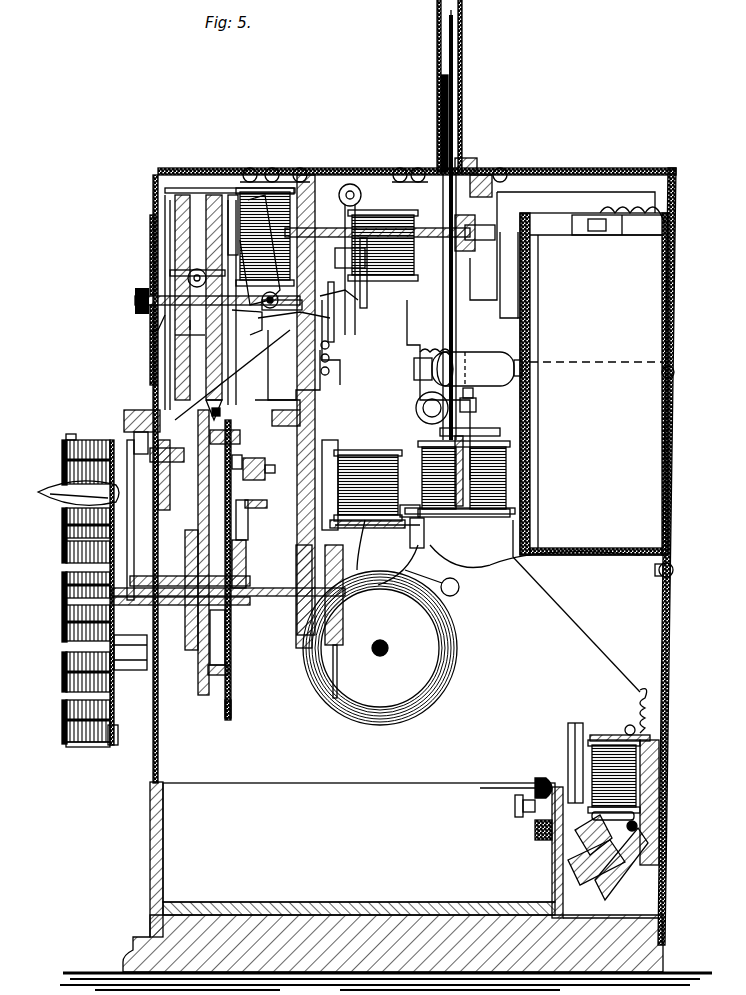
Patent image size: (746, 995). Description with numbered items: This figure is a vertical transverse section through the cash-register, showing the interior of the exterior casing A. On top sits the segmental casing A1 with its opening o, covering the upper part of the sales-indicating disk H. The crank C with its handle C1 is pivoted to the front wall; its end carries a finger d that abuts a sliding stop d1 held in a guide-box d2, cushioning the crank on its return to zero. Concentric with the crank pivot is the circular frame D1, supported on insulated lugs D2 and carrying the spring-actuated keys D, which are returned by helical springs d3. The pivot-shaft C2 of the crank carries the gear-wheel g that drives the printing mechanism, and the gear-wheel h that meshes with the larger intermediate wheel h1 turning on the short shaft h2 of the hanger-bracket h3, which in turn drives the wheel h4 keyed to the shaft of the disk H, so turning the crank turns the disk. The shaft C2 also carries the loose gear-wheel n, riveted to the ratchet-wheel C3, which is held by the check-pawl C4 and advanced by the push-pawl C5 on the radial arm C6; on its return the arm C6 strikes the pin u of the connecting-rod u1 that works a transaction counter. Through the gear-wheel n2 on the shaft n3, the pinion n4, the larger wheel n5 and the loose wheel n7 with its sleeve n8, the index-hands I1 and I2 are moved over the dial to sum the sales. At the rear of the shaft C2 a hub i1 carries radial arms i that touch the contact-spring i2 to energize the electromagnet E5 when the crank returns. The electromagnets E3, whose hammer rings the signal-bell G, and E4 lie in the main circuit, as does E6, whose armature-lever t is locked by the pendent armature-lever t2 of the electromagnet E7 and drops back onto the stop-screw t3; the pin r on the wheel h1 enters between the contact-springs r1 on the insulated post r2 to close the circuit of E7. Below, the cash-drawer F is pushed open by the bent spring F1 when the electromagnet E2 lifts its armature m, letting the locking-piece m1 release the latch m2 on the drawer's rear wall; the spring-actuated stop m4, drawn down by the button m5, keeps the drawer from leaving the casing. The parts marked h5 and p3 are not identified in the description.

The exterior casing A is at (678, 628).
The segmental casing A1 is at (462, 100).
The sales-indicating disk H is at (462, 38).
The opening o is at (435, 225).
The electromagnet E6 is at (290, 200).
The electromagnet E7 is at (395, 212).
The gear-wheel h4 is at (341, 259).
The armature-lever t2 is at (353, 234).
The rod h5 is at (375, 261).
The armature-lever t is at (262, 251).
The stop-screw t3 is at (294, 319).
The insulated post r2 is at (247, 324).
The pin r is at (339, 302).
The contact-springs r1 is at (343, 342).
The intermediate gear-wheel h1 is at (340, 328).
The hanger-bracket h3 is at (294, 365).
The gear-wheel n7 is at (182, 195).
The gear-wheel n2 is at (214, 195).
The index-hand I2 is at (150, 248).
The index-hand I1 is at (150, 358).
The shaft n3 is at (135, 300).
The sleeve n8 is at (150, 332).
The gear-wheel n5 is at (197, 299).
The pin p3 is at (190, 338).
The guide-box d2 is at (124, 412).
The sliding stop d1 is at (134, 440).
The finger d is at (162, 475).
The crank C is at (134, 525).
The gear-wheel n is at (198, 515).
The pinion n4 is at (220, 412).
The gear-wheel g is at (185, 552).
The check-pawl C4 is at (231, 440).
The pin u is at (248, 459).
The connecting-rod u1 is at (264, 469).
The short shaft h2 is at (277, 431).
The push-pawl C5 is at (248, 510).
The radial arm C6 is at (246, 555).
The gear-wheel h is at (296, 568).
The pivot-shaft C2 is at (268, 598).
The ratchet-wheel C3 is at (248, 712).
The handle C1 is at (61, 493).
The keys D is at (62, 450).
The helical springs d3 is at (70, 434).
The lugs D2 is at (118, 670).
The circular frame D1 is at (116, 745).
The electromagnet E5 is at (455, 352).
The electromagnet E3 is at (380, 458).
The electromagnet E4 is at (506, 477).
The contact-spring i2 is at (498, 552).
The signal-bell G is at (381, 647).
The hub i1 is at (343, 615).
The radial arms i is at (337, 675).
The cash-drawer F is at (150, 845).
The bent spring F1 is at (575, 723).
The electromagnet E2 is at (640, 768).
The spring-actuated stop m4 is at (516, 780).
The button m5 is at (520, 815).
The locking-piece m1 is at (575, 855).
The latch m2 is at (610, 875).
The armature m is at (640, 818).